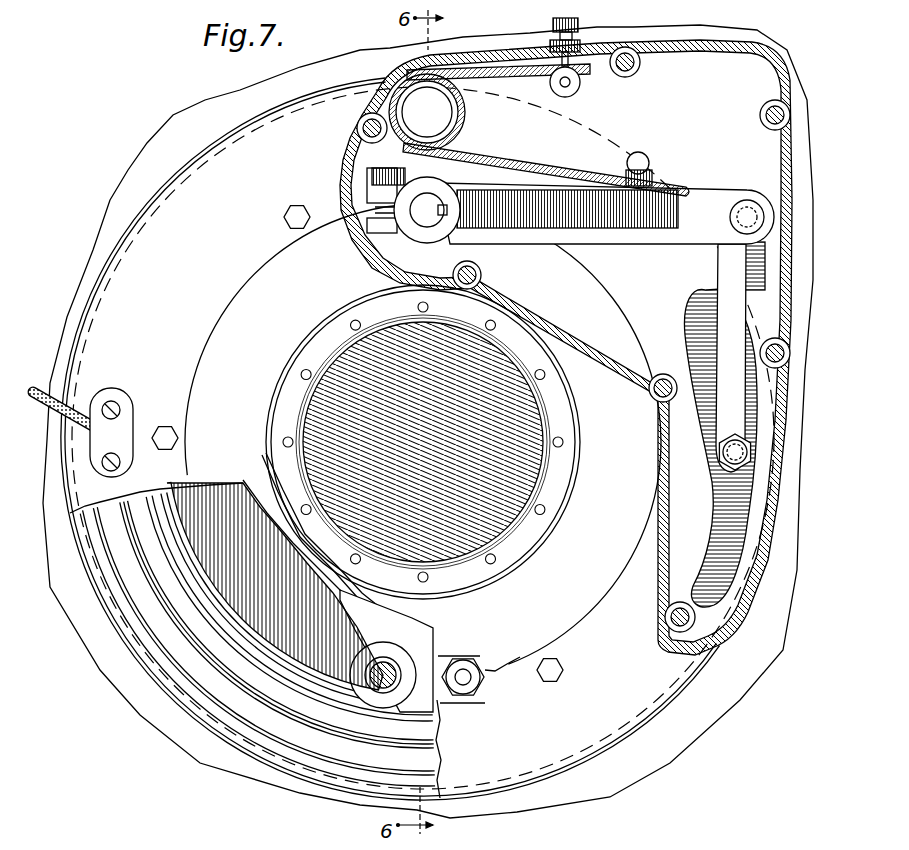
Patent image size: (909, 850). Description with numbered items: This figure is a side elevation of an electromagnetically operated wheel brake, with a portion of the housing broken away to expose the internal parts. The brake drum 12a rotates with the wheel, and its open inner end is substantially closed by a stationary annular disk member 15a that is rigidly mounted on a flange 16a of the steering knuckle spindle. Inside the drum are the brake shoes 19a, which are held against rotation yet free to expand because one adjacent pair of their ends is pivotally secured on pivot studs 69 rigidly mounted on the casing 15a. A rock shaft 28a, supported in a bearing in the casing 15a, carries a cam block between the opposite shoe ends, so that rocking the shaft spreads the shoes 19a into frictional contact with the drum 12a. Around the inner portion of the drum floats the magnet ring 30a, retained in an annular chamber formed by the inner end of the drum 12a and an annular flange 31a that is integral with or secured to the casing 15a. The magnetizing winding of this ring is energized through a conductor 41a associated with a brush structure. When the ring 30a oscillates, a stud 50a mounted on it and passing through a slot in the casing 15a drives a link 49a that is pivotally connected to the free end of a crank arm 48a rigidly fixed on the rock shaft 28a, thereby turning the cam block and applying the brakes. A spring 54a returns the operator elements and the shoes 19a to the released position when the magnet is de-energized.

The brake drum 12a is at (230, 650).
The annular disk member 15a is at (573, 607).
The flange 16a is at (530, 530).
The shoes 19a is at (218, 567).
The rock shaft 28a is at (433, 223).
The magnet ring 30a is at (230, 703).
The annular flange 31a is at (97, 587).
The conductor 41a is at (78, 408).
The crank arm 48a is at (667, 230).
The link 49a is at (727, 327).
The stud 50a is at (733, 463).
The spring 54a is at (500, 158).
The pivot studs 69 is at (373, 697).